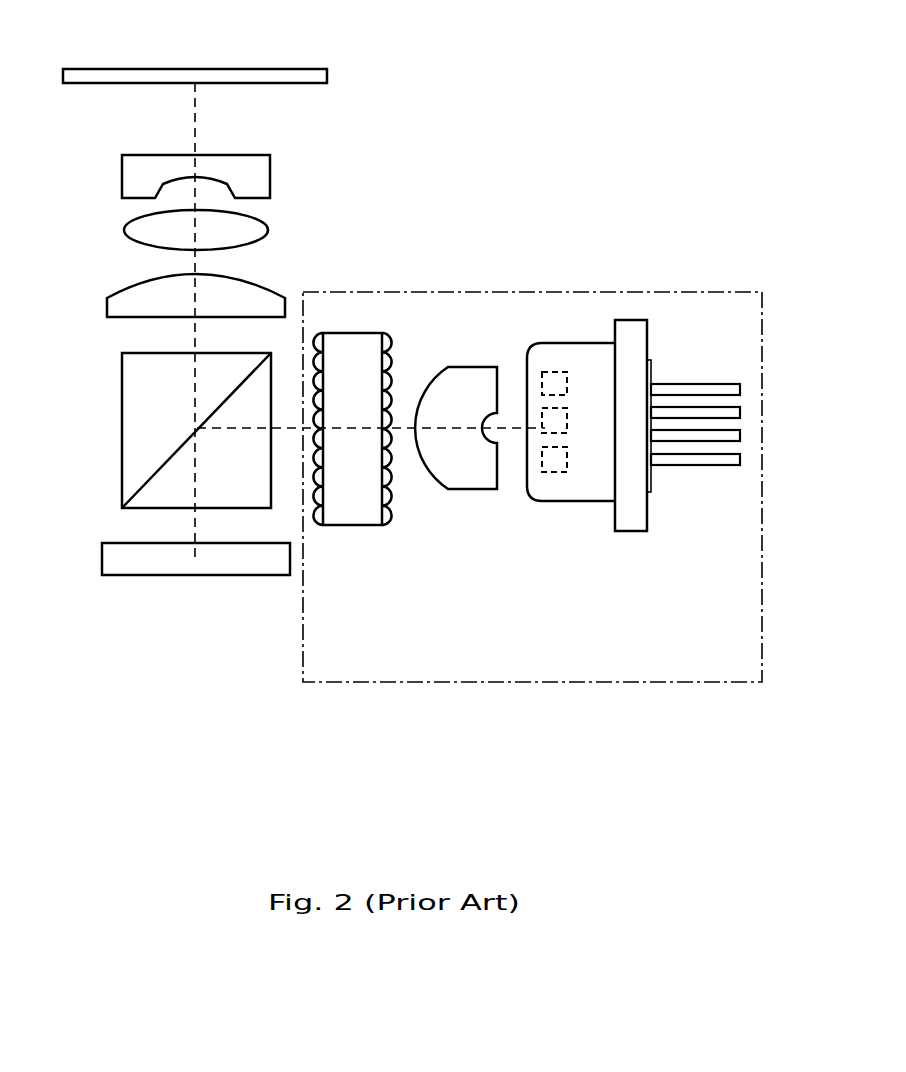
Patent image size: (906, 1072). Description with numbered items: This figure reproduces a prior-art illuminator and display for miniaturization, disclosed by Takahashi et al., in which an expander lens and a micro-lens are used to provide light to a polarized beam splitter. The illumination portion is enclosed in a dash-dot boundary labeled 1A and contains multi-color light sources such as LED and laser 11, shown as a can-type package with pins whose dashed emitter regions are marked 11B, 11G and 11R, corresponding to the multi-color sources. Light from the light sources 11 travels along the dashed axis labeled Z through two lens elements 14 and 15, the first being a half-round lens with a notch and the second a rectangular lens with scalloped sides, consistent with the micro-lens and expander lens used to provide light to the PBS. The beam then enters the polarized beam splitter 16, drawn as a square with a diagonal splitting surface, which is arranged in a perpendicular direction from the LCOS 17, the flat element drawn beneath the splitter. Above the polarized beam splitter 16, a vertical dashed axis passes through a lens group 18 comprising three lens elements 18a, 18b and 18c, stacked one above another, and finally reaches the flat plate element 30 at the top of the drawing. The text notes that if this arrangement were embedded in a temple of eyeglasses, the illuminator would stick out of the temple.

The image display element / screen 30 is at (195, 68).
The projection lens group 18 is at (263, 236).
The first lens 18a is at (239, 286).
The second lens 18b is at (262, 228).
The third lens 18c is at (258, 180).
The polarized beam splitter 16 is at (130, 413).
The LCOS 17 is at (198, 577).
The fly-eye / lenticular lens 15 is at (348, 526).
The collimating lens 14 is at (467, 490).
The multi-color light sources 11 is at (632, 460).
The blue laser emitter 11B is at (548, 370).
The green laser emitter 11G is at (568, 420).
The red laser emitter 11R is at (556, 474).
The light source device 1A is at (682, 290).
The optical axis Z is at (503, 426).